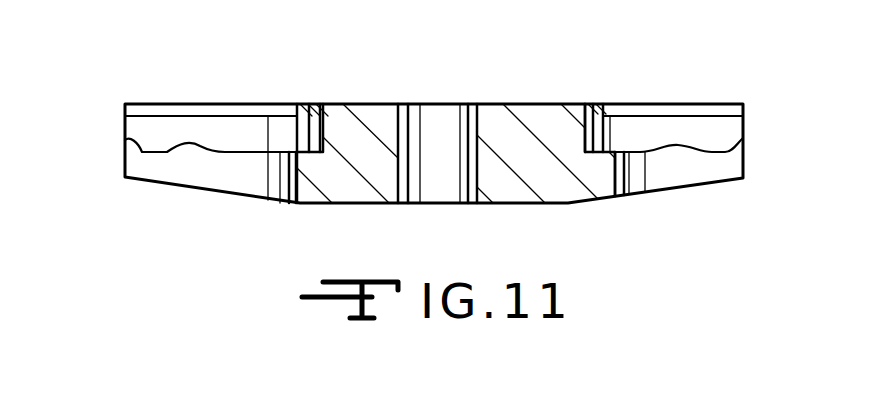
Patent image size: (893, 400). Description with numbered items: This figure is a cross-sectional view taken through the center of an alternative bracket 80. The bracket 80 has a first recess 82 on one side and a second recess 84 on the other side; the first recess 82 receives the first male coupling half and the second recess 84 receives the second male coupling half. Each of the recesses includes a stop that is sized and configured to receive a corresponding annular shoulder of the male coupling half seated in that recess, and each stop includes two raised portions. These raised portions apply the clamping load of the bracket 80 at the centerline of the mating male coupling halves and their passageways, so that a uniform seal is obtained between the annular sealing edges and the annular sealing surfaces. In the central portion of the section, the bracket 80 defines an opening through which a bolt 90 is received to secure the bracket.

The bracket 80 is at (757, 87).
The first recess 82 is at (638, 118).
The second recess 84 is at (243, 117).
The bolt 90 is at (430, 116).